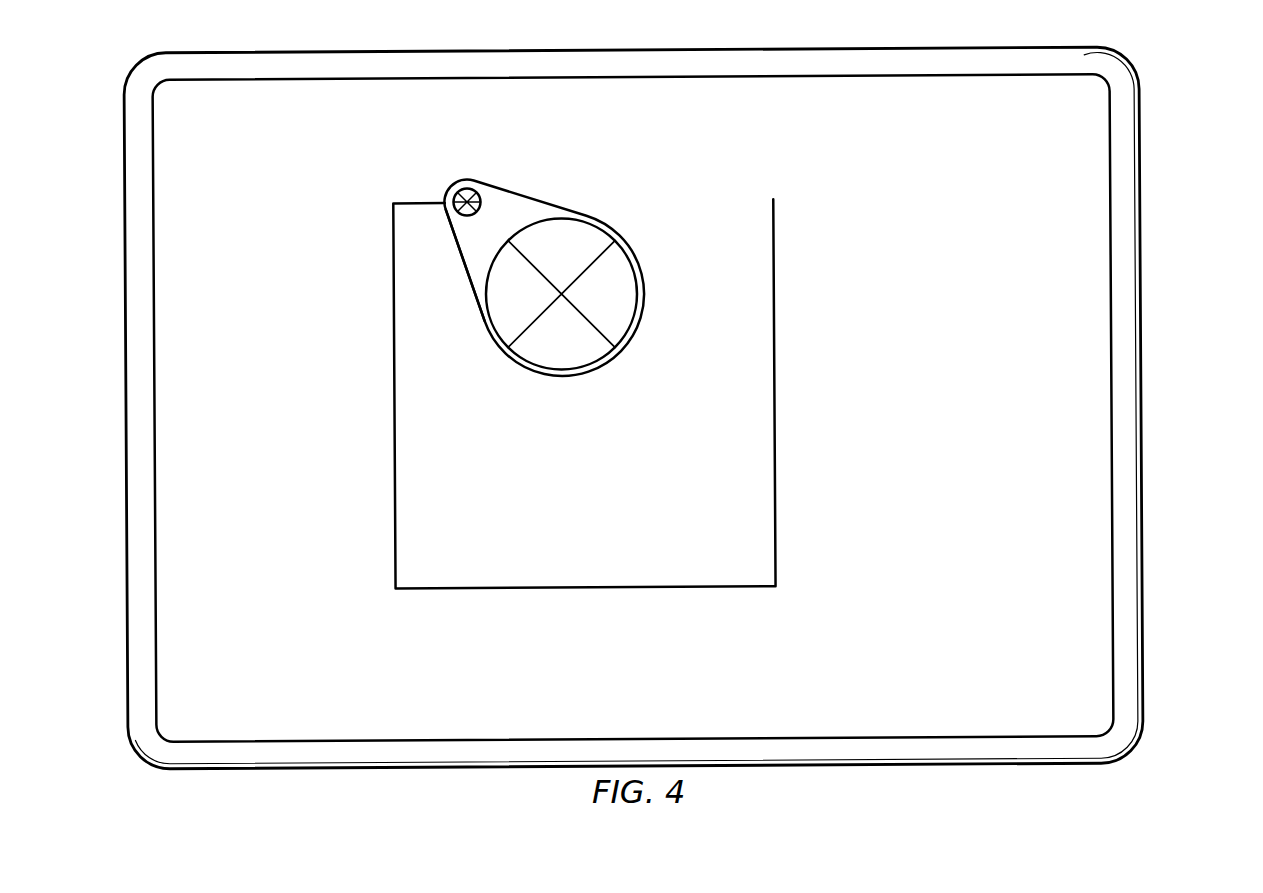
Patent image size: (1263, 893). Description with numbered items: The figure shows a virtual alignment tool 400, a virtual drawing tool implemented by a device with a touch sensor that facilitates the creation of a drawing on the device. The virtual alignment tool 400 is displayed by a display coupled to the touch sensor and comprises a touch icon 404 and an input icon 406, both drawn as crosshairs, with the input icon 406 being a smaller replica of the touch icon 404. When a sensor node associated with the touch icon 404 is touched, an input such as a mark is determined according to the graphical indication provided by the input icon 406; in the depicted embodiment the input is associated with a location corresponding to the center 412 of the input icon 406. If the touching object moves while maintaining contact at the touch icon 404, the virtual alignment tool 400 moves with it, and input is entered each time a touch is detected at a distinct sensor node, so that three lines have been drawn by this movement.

The virtual alignment tool 400 is at (524, 191).
The touch icon 404 is at (572, 228).
The input icon 406 is at (459, 219).
The center 412 is at (467, 188).